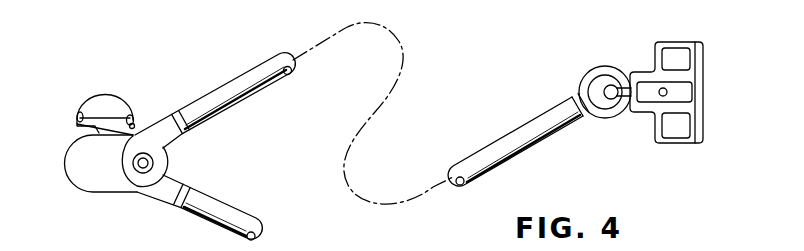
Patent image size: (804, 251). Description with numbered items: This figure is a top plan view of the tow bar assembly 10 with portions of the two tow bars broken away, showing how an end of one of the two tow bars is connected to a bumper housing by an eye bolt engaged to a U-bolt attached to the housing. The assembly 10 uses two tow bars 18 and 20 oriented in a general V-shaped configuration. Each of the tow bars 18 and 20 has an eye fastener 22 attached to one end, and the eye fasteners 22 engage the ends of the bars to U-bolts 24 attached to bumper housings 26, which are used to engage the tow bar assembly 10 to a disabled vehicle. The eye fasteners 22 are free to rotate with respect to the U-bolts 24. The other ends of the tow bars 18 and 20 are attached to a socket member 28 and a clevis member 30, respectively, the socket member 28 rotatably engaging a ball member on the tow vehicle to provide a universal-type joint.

The tow bar assembly 10 is at (450, 81).
The tow bar 18 is at (216, 99).
The tow bar 20 is at (207, 205).
The eye fastener 22 is at (580, 79).
The U-bolt 24 is at (610, 84).
The bumper housing 26 is at (678, 75).
The socket member 28 is at (100, 180).
The clevis member 30 is at (155, 187).